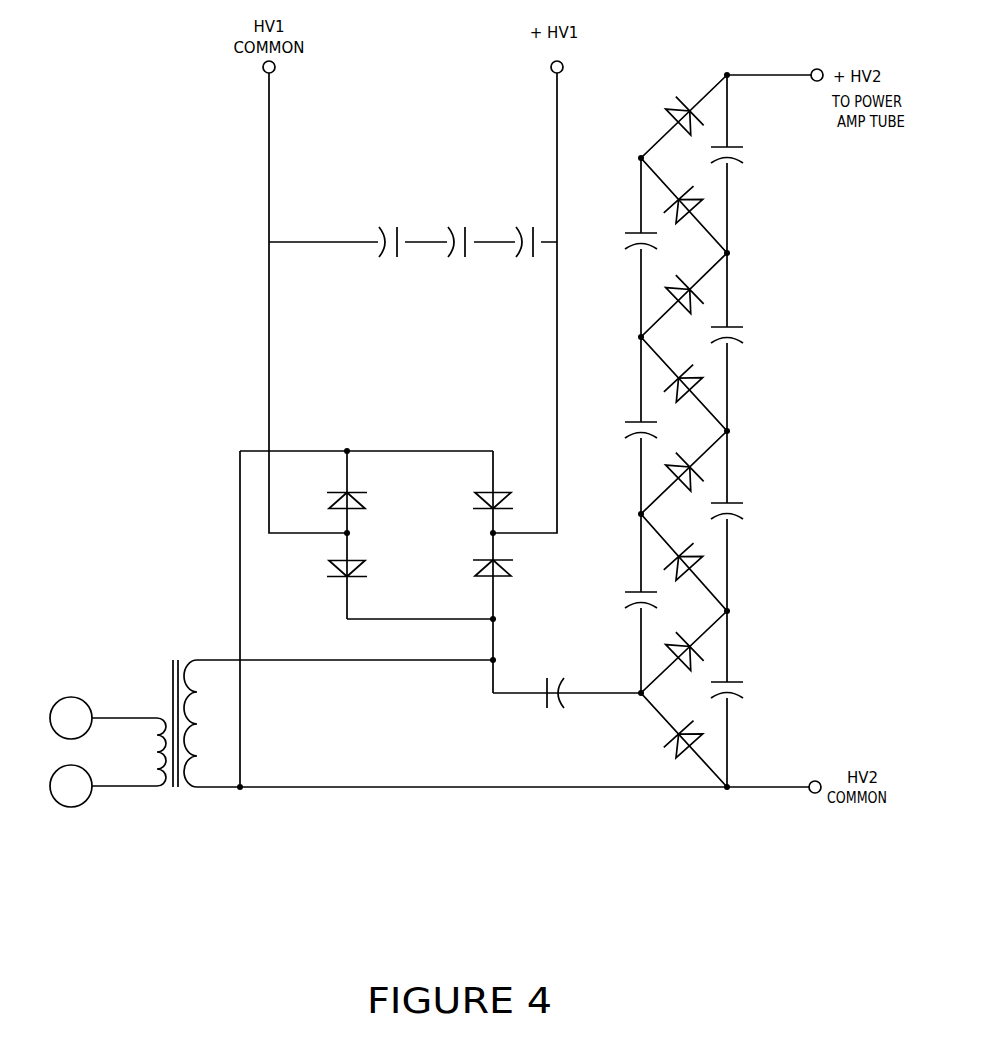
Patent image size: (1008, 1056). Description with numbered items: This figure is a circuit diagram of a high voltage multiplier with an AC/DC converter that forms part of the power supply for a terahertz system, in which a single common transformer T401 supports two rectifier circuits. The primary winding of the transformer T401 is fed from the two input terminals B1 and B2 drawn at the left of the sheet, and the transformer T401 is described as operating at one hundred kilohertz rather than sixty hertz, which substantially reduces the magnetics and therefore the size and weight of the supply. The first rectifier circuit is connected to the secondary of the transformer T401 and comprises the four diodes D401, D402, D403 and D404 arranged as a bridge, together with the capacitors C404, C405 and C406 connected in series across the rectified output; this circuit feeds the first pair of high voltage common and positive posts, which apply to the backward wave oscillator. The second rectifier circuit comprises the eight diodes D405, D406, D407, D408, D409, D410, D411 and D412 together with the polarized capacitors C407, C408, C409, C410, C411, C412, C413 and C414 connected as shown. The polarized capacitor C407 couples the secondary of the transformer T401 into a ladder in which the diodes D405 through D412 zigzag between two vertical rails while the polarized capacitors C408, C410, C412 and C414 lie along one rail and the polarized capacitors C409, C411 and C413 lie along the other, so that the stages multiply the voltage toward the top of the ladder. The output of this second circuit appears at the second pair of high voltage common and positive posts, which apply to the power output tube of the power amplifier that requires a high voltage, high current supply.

The common transformer T401 is at (164, 723).
The primary input terminal B1 is at (103, 718).
The primary input terminal B2 is at (103, 786).
The capacitor C404 is at (390, 228).
The capacitor C405 is at (456, 227).
The capacitor C406 is at (528, 228).
The polarized capacitor C407 is at (558, 678).
The polarized capacitor C408 is at (750, 687).
The polarized capacitor C409 is at (617, 597).
The polarized capacitor C410 is at (749, 509).
The polarized capacitor C411 is at (620, 430).
The polarized capacitor C412 is at (751, 335).
The polarized capacitor C413 is at (621, 241).
The polarized capacitor C414 is at (751, 156).
The diode D401 is at (327, 496).
The diode D402 is at (475, 496).
The diode D403 is at (327, 567).
The diode D404 is at (475, 570).
The diode D405 is at (686, 729).
The diode D406 is at (683, 641).
The diode D407 is at (686, 550).
The diode D408 is at (683, 461).
The diode D409 is at (685, 369).
The diode D410 is at (684, 284).
The diode D411 is at (685, 192).
The diode D412 is at (679, 105).